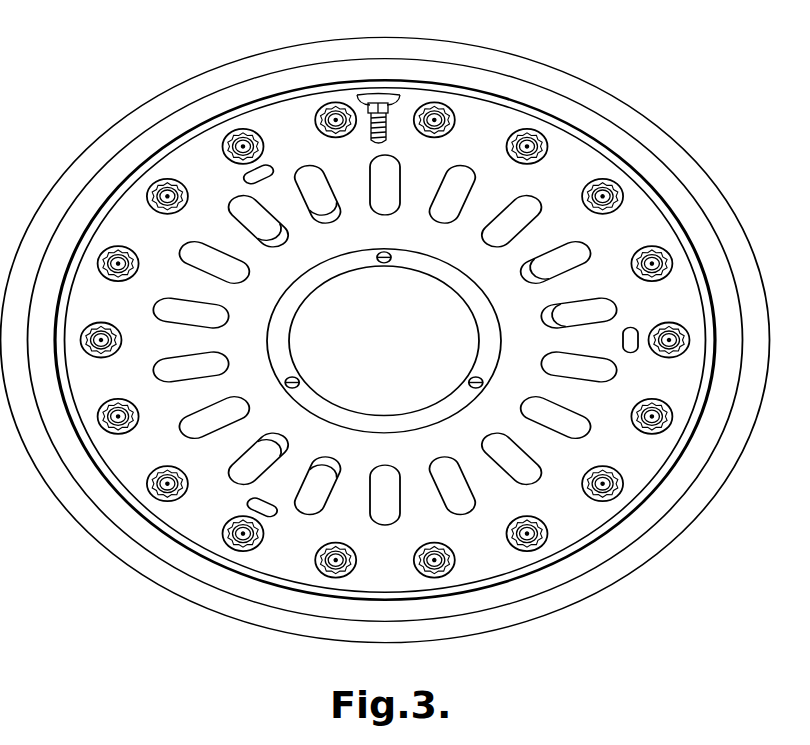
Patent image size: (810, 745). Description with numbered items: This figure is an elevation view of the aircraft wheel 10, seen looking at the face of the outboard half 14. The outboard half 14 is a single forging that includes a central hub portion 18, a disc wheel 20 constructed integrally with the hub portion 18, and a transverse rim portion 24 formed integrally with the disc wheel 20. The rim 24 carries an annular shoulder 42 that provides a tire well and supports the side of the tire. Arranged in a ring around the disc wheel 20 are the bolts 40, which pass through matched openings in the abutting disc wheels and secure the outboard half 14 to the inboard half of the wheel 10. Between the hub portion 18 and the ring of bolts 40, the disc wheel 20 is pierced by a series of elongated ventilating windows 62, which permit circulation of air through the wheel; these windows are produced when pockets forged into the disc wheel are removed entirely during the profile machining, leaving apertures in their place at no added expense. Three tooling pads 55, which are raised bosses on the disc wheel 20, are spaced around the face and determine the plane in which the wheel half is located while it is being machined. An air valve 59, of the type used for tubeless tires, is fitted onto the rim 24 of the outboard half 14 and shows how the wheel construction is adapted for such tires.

The aircraft wheel 10 is at (608, 78).
The outboard half 14 is at (512, 60).
The hub portion 18 is at (415, 422).
The disc wheel 20 is at (486, 557).
The transverse rim portion 24 is at (458, 625).
The bolts 40 is at (313, 120).
The annular shoulder 42 is at (587, 589).
The tooling pads 55 is at (245, 173).
The air valve 59 is at (380, 143).
The ventilating windows 62 is at (277, 234).